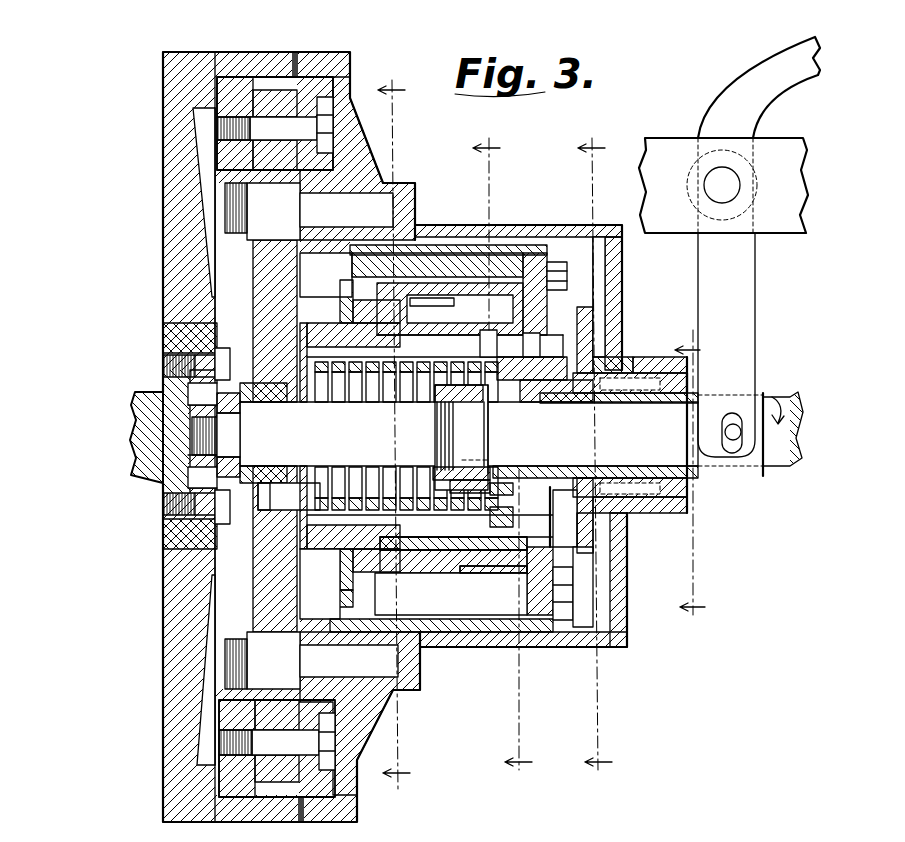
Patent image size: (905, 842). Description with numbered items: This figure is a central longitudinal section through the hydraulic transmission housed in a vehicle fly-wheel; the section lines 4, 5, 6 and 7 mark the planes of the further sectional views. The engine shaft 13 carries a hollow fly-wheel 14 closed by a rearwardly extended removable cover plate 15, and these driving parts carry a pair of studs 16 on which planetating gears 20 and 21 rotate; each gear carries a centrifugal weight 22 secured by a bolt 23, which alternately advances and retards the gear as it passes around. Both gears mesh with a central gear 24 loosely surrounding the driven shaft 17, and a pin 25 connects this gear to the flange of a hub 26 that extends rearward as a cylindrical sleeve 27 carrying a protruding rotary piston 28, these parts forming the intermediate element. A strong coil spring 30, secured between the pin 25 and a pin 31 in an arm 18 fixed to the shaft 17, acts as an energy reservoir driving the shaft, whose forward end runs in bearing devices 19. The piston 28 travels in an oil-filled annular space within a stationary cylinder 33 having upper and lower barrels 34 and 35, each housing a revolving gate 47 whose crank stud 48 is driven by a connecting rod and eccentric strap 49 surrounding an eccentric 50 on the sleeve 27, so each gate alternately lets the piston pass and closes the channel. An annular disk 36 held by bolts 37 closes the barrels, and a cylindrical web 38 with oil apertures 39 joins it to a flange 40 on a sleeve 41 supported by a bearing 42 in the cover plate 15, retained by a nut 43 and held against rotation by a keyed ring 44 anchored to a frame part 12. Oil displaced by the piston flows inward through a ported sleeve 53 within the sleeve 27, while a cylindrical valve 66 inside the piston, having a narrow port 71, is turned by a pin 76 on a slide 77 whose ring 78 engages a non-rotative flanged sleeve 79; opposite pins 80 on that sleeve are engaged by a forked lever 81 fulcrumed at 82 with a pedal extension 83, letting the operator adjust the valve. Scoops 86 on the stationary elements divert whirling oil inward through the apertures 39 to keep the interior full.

The section line 4- 4 is at (690, 480).
The section line 5- 5 is at (595, 454).
The section line 6- 6 is at (502, 456).
The section line 7- 7 is at (394, 434).
The frame parts 12 is at (805, 175).
The engine shaft 13 is at (135, 432).
The fly-wheel 14 is at (212, 755).
The cover plate 15 is at (350, 52).
The studs 16 is at (311, 436).
The driven shaft 17 is at (536, 434).
The arm 18 is at (470, 470).
The bearing devices 19 is at (228, 360).
The rotary gear 20 is at (262, 282).
The gear 21 is at (262, 560).
The centrifugal weight 22 is at (245, 100).
The bolt 23 is at (276, 433).
The central gear 24 is at (255, 505).
The pin 25 is at (289, 496).
The hub 26 is at (286, 470).
The cylindrical sleeve 27 is at (312, 525).
The rotary piston 28 is at (425, 532).
The coil spring 30 is at (375, 395).
The pin 31 is at (497, 505).
The stationary cylinder 33 is at (505, 250).
The barrel 34 is at (468, 246).
The barrel 35 is at (475, 618).
The annular disk 36 is at (540, 243).
The bolts 37 is at (563, 280).
The cylindrical web 38 is at (580, 304).
The oil apertures 39 is at (572, 316).
The flange 40 is at (620, 527).
The sleeve 41 is at (633, 470).
The bearing 42 is at (622, 360).
The confining nut 43 is at (640, 378).
The ring 44 is at (655, 360).
The revolving gate 47 is at (348, 276).
The stud 48 is at (340, 296).
The connecting rod and eccentric strap 49 is at (345, 327).
The eccentric 50 is at (320, 584).
The ported sleeve 53 is at (438, 355).
The circular valve 66 is at (460, 310).
The narrow port 71 is at (432, 312).
The pin 76 is at (488, 345).
The slide 77 is at (532, 344).
The ring 78 is at (563, 517).
The flanged sleeve 79 is at (640, 400).
The pins 80 is at (733, 440).
The forked lever 81 is at (726, 297).
The fulcrum 82 is at (722, 185).
The pedal extension 83 is at (759, 87).
The scoops 86 is at (580, 620).